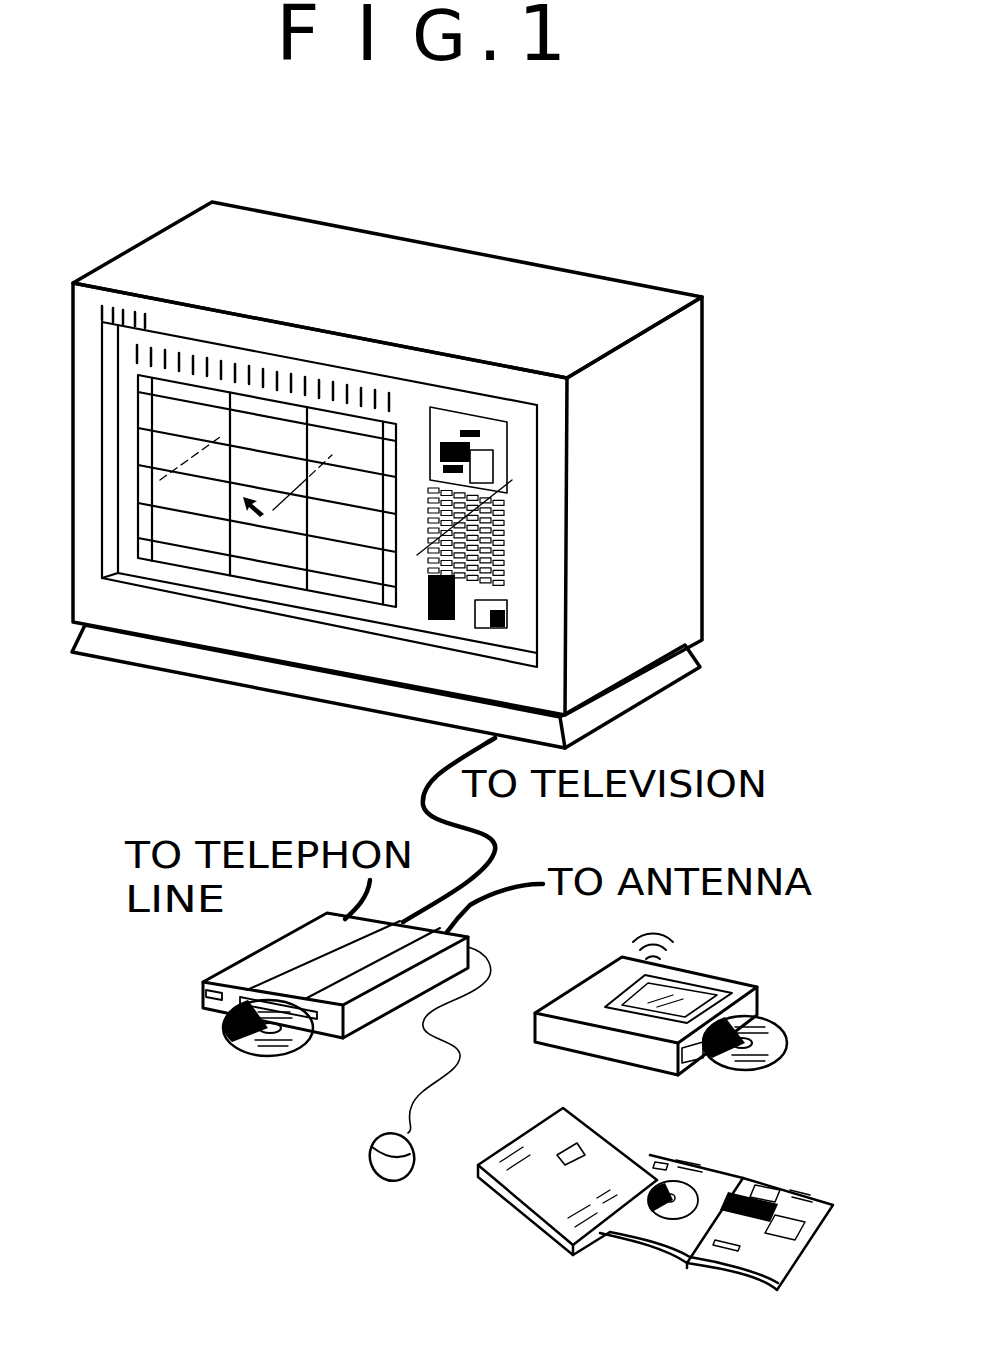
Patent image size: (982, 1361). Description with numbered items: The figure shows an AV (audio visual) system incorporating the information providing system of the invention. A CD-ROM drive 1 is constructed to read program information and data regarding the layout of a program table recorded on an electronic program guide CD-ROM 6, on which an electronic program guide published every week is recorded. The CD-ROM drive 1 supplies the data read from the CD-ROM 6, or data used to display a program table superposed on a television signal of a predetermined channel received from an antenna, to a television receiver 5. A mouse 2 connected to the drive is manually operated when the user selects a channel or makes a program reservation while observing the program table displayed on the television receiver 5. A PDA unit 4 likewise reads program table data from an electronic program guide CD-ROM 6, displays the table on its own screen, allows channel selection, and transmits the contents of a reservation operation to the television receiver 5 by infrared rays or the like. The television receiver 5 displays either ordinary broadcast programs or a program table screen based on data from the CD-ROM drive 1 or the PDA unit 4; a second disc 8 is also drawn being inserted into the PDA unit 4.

The CD-ROM drive 1 is at (222, 1015).
The mouse 2 is at (368, 1178).
The PDA unit 4 is at (545, 1048).
The television receiver 5 is at (702, 405).
The electronic program guide CD-ROM 6 is at (278, 1060).
The CD-ROM disc 8 is at (787, 1027).